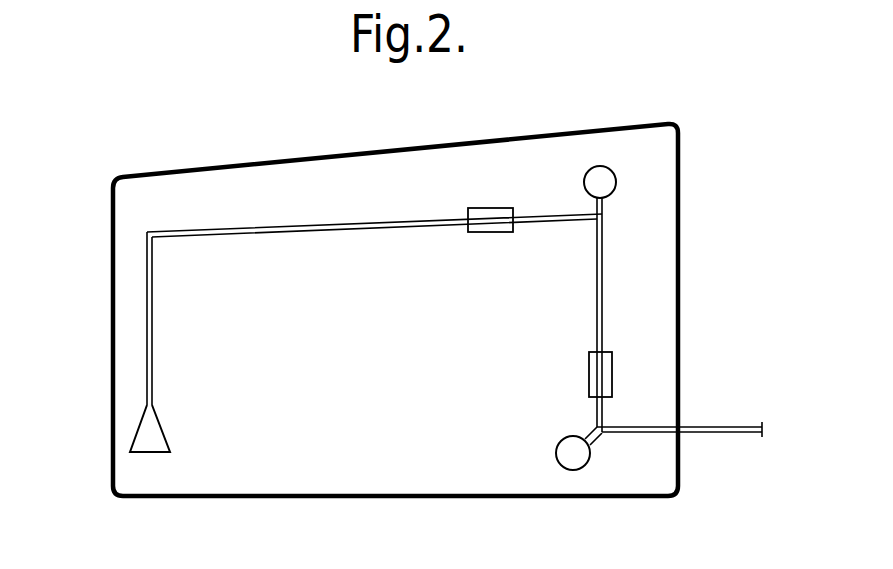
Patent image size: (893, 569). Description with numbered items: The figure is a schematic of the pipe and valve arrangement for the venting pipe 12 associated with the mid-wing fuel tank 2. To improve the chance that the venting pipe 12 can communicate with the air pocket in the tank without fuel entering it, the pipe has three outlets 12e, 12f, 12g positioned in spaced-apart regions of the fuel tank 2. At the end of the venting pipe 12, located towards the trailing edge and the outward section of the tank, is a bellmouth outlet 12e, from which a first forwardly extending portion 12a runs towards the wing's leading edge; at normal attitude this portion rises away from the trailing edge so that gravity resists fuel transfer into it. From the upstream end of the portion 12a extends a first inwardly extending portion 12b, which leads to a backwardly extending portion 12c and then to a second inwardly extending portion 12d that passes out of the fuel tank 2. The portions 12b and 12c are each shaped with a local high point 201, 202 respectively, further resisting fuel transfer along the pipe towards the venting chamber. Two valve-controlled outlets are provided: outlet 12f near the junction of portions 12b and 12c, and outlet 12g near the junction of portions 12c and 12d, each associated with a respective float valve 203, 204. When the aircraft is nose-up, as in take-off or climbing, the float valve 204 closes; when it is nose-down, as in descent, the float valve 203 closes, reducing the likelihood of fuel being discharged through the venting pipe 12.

The mid-wing fuel tank 2 is at (147, 173).
The venting pipe 12 is at (414, 332).
The first forwardly extending portion 12a is at (147, 338).
The first inwardly extending portion 12b is at (313, 228).
The backwardly extending portion 12c is at (603, 273).
The second inwardly extending portion 12d is at (640, 432).
The bellmouth outlet 12e is at (145, 437).
The valve-controlled outlet 12f is at (603, 205).
The valve-controlled outlet 12g is at (602, 435).
The local high point 201 is at (490, 208).
The local high point 202 is at (612, 365).
The float valve 203 is at (597, 178).
The float valve 204 is at (568, 452).